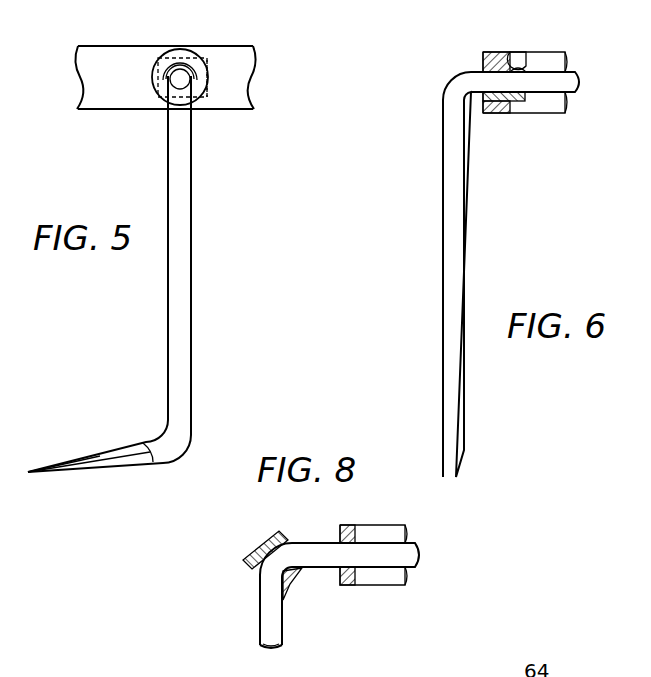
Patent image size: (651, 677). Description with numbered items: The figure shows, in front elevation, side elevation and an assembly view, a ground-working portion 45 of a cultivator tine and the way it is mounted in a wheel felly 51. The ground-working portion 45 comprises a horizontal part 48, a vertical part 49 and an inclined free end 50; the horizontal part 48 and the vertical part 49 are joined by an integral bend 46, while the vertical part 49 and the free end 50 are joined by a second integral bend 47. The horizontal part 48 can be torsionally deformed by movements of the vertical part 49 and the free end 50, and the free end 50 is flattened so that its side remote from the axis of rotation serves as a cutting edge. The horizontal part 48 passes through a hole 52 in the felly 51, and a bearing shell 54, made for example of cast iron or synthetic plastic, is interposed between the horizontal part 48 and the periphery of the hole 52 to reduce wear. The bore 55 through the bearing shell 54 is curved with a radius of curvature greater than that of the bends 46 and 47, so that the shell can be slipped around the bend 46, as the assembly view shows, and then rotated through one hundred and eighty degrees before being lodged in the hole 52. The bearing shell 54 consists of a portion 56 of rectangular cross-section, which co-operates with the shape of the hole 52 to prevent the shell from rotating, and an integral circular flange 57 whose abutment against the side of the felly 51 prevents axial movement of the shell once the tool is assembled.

In FIG. 5, the ground-working portion 45 is at (192, 296).
In FIG. 6, the ground-working portion 45 is at (464, 264).
In FIG. 5, the integral bend 46 is at (186, 79).
In FIG. 6, the integral bend 46 is at (457, 84).
In FIG. 5, the integral bend 47 is at (173, 450).
In FIG. 6, the integral bend 47 is at (460, 428).
In FIG. 6, the horizontal part 48 is at (578, 90).
In FIG. 8, the horizontal part 48 is at (418, 568).
In FIG. 6, the vertical part 49 is at (443, 179).
In FIG. 8, the vertical part 49 is at (260, 608).
In FIG. 5, the inclined free end 50 is at (98, 455).
In FIG. 5, the felly 51 is at (246, 82).
In FIG. 6, the felly 51 is at (554, 109).
In FIG. 8, the felly 51 is at (390, 585).
In FIG. 6, the hole 52 is at (519, 62).
In FIG. 8, the hole 52 is at (340, 529).
In FIG. 6, the bearing shell 54 is at (518, 63).
In FIG. 6, the bore 55 is at (484, 65).
In FIG. 8, the bore 55 is at (258, 571).
In FIG. 5, the portion of rectangular cross-section 56 is at (158, 98).
In FIG. 6, the portion of rectangular cross-section 56 is at (516, 103).
In FIG. 8, the portion of rectangular cross-section 56 is at (302, 576).
In FIG. 5, the circular flange 57 is at (200, 106).
In FIG. 6, the circular flange 57 is at (488, 113).
In FIG. 8, the circular flange 57 is at (290, 594).